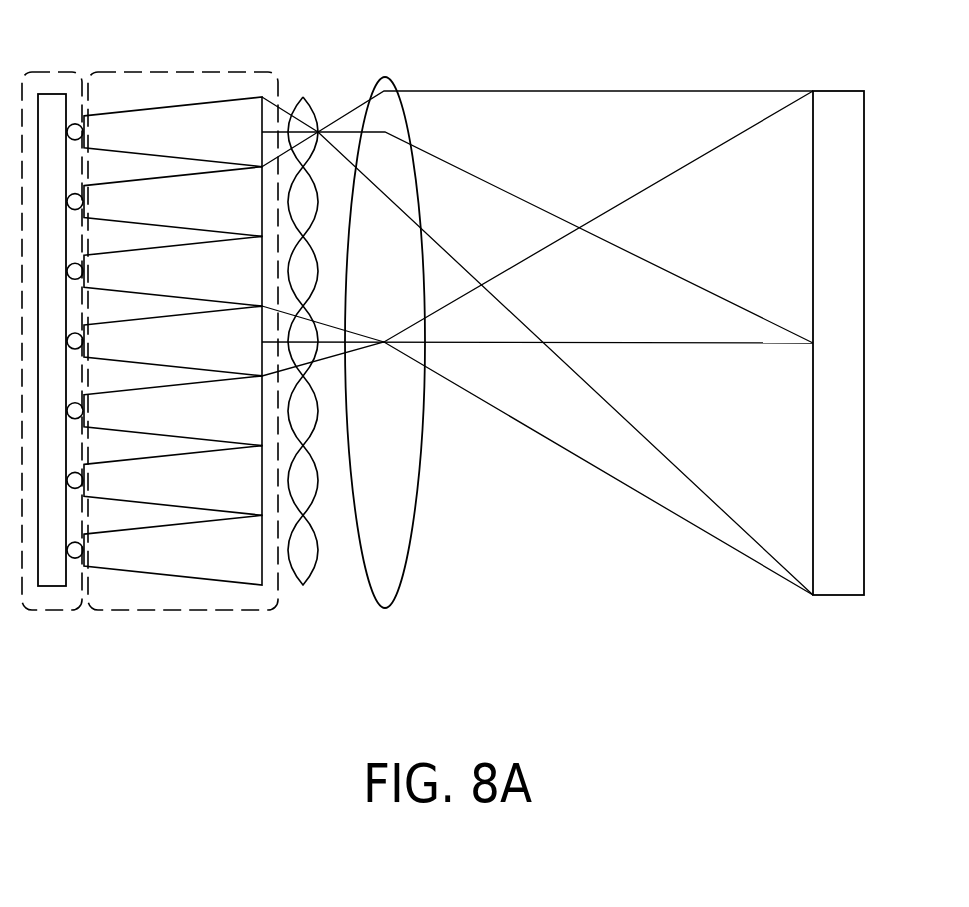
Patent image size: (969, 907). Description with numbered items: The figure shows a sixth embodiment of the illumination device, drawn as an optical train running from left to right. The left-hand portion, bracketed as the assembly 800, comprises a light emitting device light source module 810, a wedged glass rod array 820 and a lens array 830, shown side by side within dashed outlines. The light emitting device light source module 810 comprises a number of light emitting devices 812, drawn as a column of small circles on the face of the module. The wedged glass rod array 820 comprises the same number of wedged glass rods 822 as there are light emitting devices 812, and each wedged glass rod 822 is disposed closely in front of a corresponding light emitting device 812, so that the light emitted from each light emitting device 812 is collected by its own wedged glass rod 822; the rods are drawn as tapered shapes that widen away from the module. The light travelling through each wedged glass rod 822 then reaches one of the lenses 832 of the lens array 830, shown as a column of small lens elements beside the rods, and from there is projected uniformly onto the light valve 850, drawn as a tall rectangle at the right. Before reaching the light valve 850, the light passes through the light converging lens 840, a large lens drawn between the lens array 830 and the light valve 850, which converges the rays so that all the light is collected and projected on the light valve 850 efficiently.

The light source module 800 is at (412, 668).
The light emitting device light source module 810 is at (58, 70).
The light emitting device 812 is at (80, 558).
The wedged glass rod array 820 is at (172, 70).
The wedged glass rod 822 is at (215, 560).
The lens array 830 is at (305, 108).
The lens 832 is at (307, 563).
The light converging lens 840 is at (392, 78).
The light valve 850 is at (838, 90).